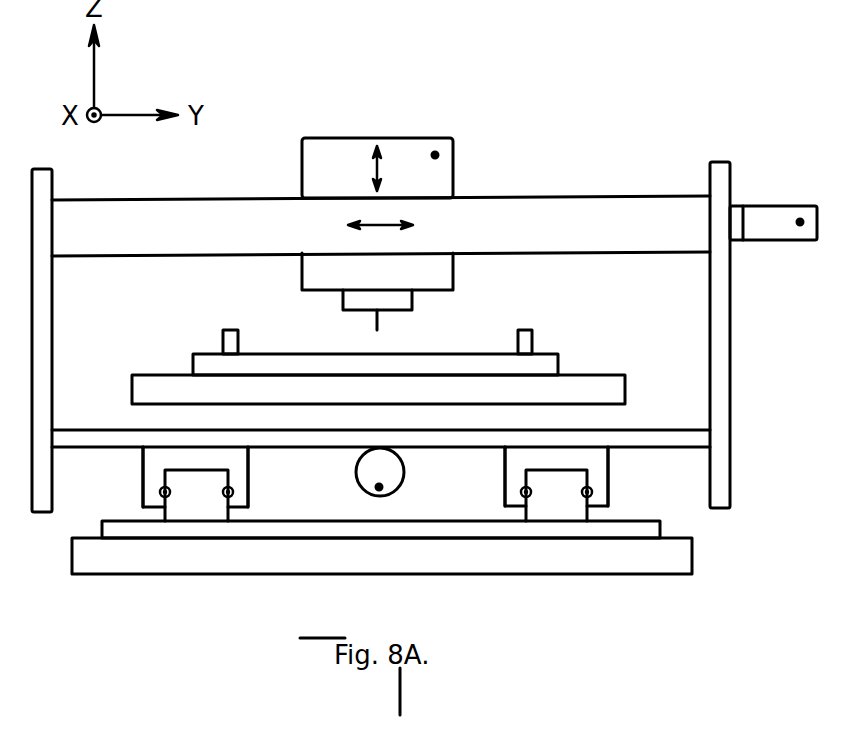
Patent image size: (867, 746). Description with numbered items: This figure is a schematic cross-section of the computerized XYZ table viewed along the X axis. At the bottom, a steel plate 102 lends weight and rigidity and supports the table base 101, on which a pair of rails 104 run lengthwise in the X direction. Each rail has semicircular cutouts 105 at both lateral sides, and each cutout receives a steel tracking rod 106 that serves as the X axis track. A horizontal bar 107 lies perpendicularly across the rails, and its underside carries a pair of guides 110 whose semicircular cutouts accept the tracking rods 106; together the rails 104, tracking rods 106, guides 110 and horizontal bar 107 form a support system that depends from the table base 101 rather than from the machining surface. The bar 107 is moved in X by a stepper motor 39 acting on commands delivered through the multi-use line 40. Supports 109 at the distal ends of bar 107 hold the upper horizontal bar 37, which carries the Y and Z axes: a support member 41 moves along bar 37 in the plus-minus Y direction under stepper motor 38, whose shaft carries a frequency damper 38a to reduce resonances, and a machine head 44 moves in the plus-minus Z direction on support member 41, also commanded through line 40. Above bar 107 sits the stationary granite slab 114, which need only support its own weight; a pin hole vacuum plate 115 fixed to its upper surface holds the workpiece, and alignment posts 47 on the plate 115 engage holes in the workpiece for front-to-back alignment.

The horizontal bar 37 is at (637, 196).
The stepper motor 38 is at (778, 241).
The frequency damper 38a is at (738, 207).
The stepper motor 39 is at (404, 472).
The line 40 is at (510, 147).
The support member 41 is at (333, 147).
The machine head 44 is at (345, 309).
The alignment posts 47 is at (236, 330).
The table base 101 is at (660, 523).
The steel plate 102 is at (692, 570).
The rails 104 is at (182, 513).
The semicircular cutouts 105 is at (227, 497).
The tracking rod 106 is at (592, 493).
The horizontal bar 107 is at (693, 435).
The supports 109 is at (53, 356).
The guides 110 is at (150, 485).
The granite slab 114 is at (626, 391).
The pin hole vacuum plate 115 is at (559, 364).